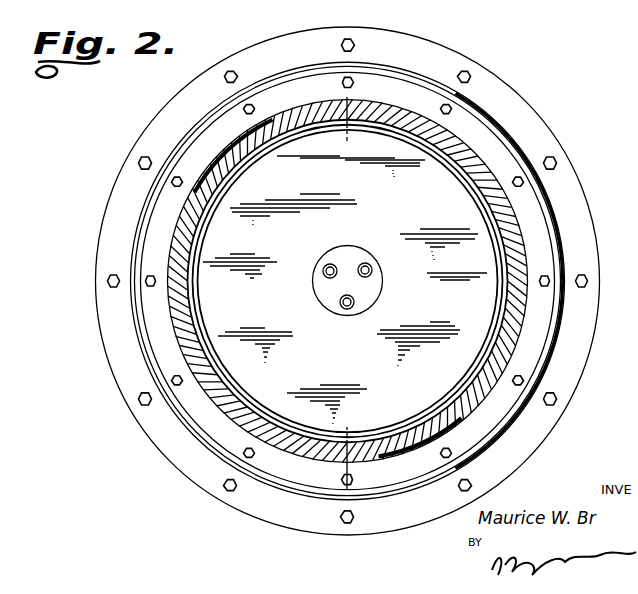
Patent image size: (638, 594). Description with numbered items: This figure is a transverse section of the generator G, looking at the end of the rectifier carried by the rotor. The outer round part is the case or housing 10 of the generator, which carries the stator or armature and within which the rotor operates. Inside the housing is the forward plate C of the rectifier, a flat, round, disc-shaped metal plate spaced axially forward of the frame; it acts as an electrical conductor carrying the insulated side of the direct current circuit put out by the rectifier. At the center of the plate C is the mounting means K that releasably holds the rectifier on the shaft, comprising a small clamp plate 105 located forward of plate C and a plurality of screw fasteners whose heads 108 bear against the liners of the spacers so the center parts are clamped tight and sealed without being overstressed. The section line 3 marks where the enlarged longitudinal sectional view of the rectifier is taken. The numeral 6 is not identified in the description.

The outer flange ring 6 is at (452, 51).
The case or housing 10 is at (586, 200).
The section line 3— 3 is at (366, 452).
The forward plate C is at (348, 281).
The clamp plate 105 is at (370, 288).
The mounting means K is at (367, 258).
The heads of the screw fasteners 108 is at (347, 305).